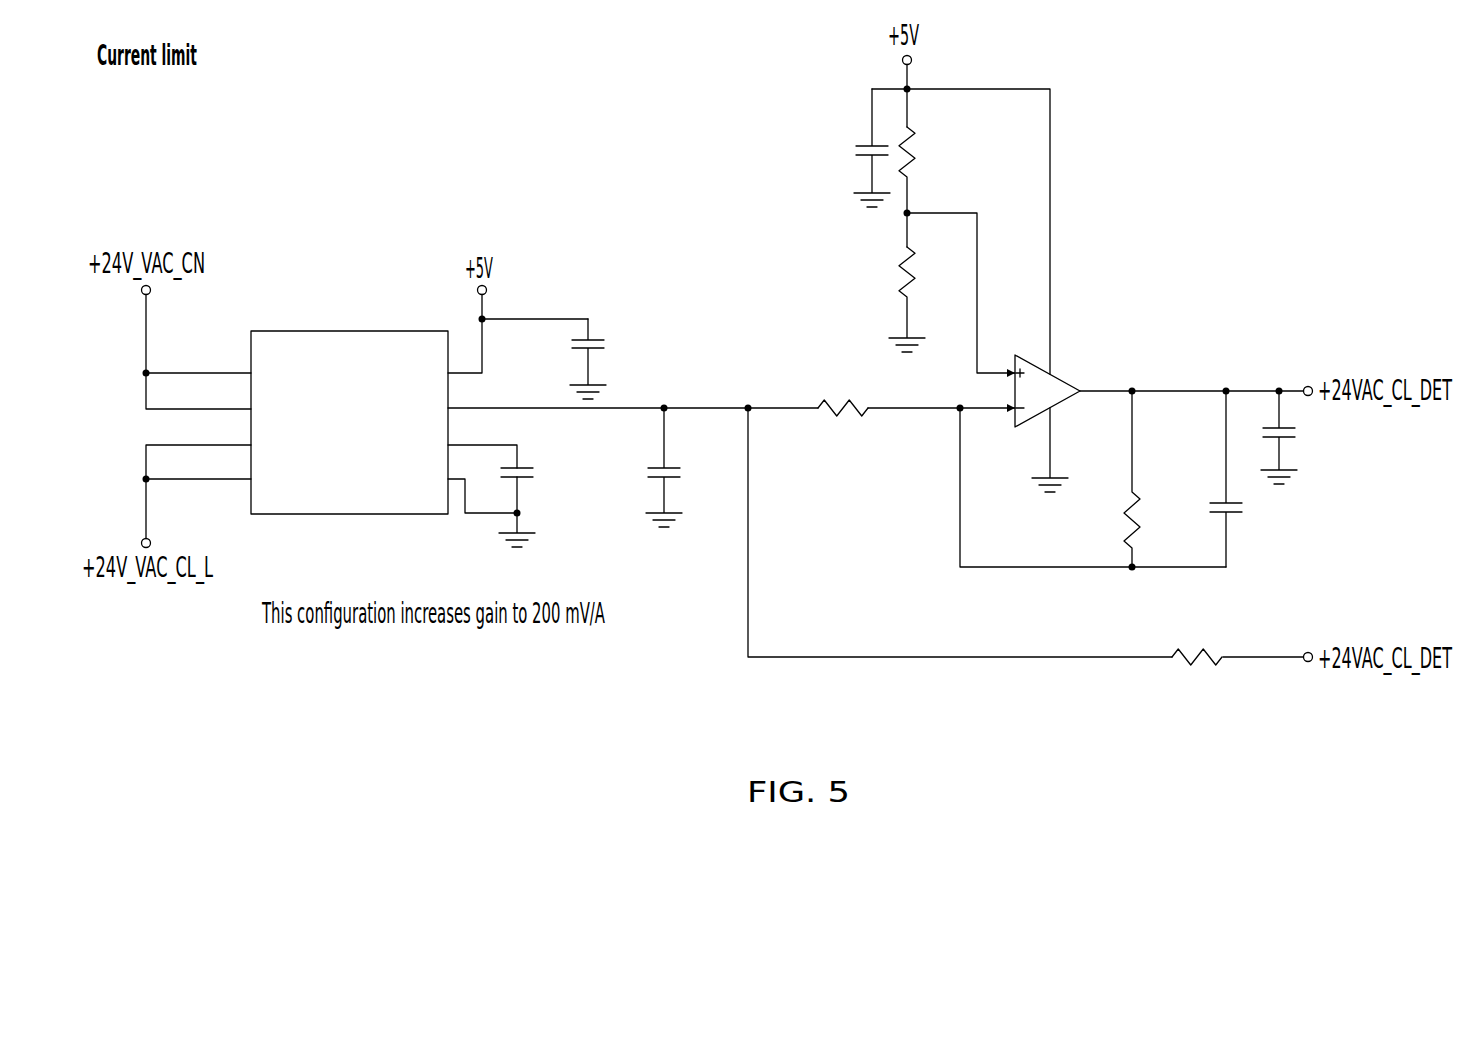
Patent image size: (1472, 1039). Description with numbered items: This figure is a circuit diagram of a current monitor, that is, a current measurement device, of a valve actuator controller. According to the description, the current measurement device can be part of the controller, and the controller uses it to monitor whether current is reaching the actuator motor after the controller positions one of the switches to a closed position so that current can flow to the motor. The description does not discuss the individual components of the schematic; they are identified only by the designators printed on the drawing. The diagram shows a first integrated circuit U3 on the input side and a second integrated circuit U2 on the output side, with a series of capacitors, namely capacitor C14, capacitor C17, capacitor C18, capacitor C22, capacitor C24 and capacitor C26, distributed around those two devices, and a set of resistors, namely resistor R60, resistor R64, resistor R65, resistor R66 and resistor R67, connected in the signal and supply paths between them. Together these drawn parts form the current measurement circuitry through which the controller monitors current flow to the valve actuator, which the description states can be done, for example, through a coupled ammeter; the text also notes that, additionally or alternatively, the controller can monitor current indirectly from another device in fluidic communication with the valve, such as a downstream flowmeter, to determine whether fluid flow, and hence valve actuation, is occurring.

The current sensor IC NEW-IC-MCS1 803GS-10 U3 is at (349, 405).
The operational amplifier NEW-IC-TLV9001 U2 is at (1096, 399).
The capacitor C-D1U16V2KX C14 is at (813, 148).
The capacitor C-D1U16V2KX C17 is at (644, 350).
The capacitor C-1KP50V2KX C18 is at (574, 458).
The capacitor C-1KP50V2KX C22 is at (1283, 479).
The capacitor C-D1U25V2KX C24 is at (1337, 437).
The capacitor C-4K7P50V2KX C26 is at (727, 467).
The resistor R-3K3R2F R60 is at (1172, 479).
The resistor R-1KR2F R64 is at (868, 393).
The resistor R-0R2 R65 is at (1205, 643).
The resistor R-100KR2F R66 is at (950, 294).
The resistor R-100KR2F R67 is at (955, 178).